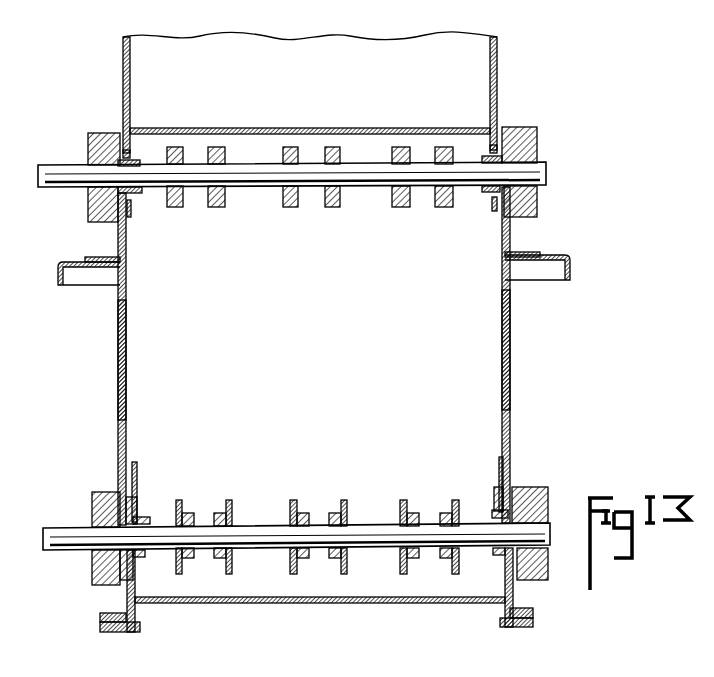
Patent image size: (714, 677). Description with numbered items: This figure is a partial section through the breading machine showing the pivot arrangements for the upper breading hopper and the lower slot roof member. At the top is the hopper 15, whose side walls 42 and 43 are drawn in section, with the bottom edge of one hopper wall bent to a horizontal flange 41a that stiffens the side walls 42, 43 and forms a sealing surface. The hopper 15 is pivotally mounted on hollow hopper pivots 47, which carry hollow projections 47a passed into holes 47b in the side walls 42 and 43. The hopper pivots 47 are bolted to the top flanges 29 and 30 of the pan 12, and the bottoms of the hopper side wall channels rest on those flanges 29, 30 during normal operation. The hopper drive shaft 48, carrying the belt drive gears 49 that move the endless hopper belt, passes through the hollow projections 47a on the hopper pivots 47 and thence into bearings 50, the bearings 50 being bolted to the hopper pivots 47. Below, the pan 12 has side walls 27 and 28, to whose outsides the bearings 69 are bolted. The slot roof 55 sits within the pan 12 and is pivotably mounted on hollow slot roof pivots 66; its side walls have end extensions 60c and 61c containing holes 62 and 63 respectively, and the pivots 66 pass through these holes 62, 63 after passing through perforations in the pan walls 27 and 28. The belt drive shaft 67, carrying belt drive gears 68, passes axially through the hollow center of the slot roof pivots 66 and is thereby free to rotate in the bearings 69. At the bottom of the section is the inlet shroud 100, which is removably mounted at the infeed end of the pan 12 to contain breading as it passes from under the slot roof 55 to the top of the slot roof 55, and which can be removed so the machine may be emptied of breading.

The pan 12 is at (120, 397).
The hopper 15 is at (347, 92).
The side wall 27 is at (122, 355).
The side wall 28 is at (510, 333).
The top flange 29 is at (75, 272).
The top flange 30 is at (553, 263).
The horizontal flange 41a is at (358, 128).
The side wall 42 is at (130, 70).
The side wall 43 is at (490, 63).
The hollow hopper pivot 47 is at (122, 243).
The hollow projection 47a is at (140, 193).
The hole 47b is at (130, 157).
The hopper drive shaft 48 is at (317, 186).
The belt drive gear 49 is at (398, 207).
The bearing 50 is at (88, 138).
The slot roof 55 is at (134, 450).
The end extension 60c is at (137, 462).
The end extension 61c is at (500, 460).
The hole 62 is at (136, 497).
The hole 63 is at (496, 490).
The hollow slot roof pivot 66 is at (140, 517).
The belt drive shaft 67 is at (248, 525).
The belt drive gear 68 is at (297, 500).
The bearing 69 is at (105, 492).
The inlet shroud 100 is at (300, 605).